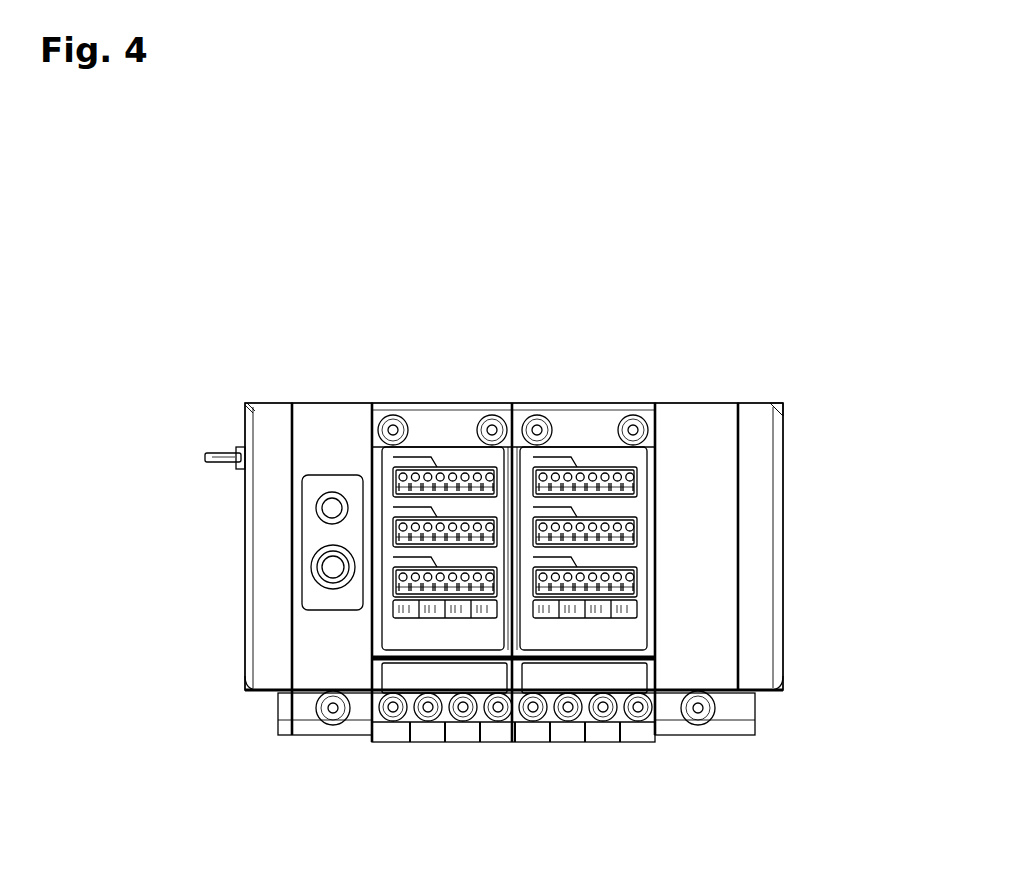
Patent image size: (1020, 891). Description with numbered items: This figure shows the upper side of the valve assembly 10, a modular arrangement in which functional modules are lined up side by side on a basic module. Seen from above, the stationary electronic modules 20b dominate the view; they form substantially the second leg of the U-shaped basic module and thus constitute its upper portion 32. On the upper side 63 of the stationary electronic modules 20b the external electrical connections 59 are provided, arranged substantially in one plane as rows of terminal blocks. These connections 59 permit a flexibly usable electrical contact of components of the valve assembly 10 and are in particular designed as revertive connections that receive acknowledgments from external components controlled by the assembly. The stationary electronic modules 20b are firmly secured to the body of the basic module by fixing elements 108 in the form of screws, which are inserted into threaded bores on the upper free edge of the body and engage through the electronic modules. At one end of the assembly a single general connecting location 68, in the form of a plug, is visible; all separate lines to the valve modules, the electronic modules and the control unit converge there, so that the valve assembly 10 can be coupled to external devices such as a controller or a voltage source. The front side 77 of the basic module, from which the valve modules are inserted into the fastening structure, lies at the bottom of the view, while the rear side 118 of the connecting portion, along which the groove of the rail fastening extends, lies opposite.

The valve assembly 10 is at (176, 316).
The general connecting location 68 is at (205, 457).
The upper portion 32 is at (728, 352).
The rear side 118 is at (483, 400).
The external electrical connection 59 is at (430, 462).
The fixing element 108 is at (394, 414).
The stationary electronic module 20b is at (637, 633).
The upper side 63 is at (581, 455).
The front side 77 is at (478, 755).